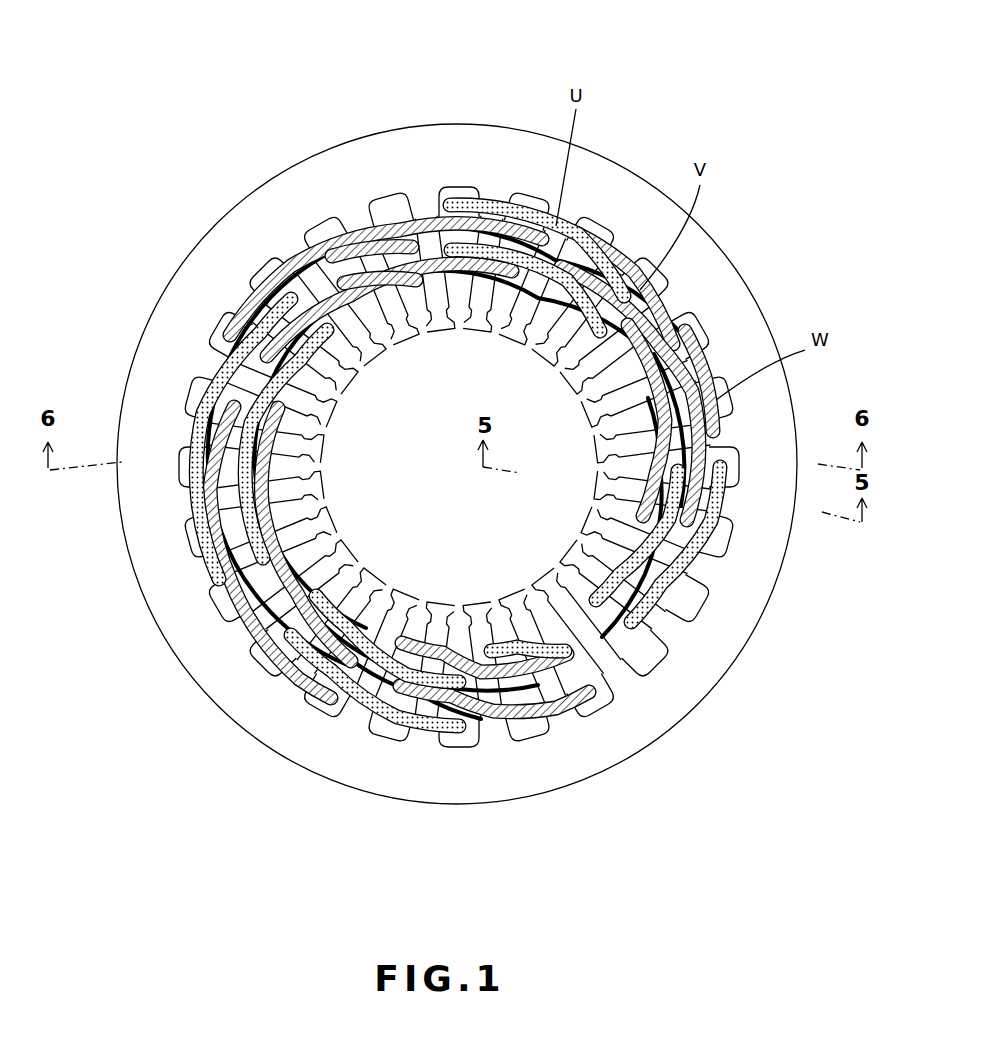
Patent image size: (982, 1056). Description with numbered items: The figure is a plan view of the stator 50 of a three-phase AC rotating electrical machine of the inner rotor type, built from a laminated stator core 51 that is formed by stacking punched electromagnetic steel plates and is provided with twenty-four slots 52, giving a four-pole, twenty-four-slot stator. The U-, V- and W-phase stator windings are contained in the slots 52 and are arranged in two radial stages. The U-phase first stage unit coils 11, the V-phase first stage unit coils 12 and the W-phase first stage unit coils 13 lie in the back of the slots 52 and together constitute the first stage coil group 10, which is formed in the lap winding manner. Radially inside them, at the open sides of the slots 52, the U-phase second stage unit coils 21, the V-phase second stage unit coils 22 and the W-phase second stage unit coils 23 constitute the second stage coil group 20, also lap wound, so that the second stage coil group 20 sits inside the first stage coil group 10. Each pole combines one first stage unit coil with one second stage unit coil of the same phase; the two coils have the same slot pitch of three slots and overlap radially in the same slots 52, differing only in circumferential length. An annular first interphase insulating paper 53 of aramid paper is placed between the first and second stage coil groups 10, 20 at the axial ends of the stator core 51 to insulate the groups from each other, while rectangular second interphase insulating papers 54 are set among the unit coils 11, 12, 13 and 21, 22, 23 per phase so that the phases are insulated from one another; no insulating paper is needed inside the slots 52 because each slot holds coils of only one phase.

The first stage coil group 10 is at (232, 305).
The U-phase first stage unit coil 11 is at (496, 200).
The V-phase first stage unit coil 12 is at (643, 288).
The W-phase first stage unit coil 13 is at (722, 505).
The second stage coil group 20 is at (313, 561).
The U-phase second stage unit coil 21 is at (535, 336).
The V-phase second stage unit coil 22 is at (592, 390).
The W-phase second stage unit coil 23 is at (630, 462).
The stator 50 is at (464, 74).
The stator core 51 is at (362, 140).
The slot 52 is at (270, 418).
The first interphase insulating paper 53 is at (370, 705).
The second interphase insulating paper 54 is at (204, 573).